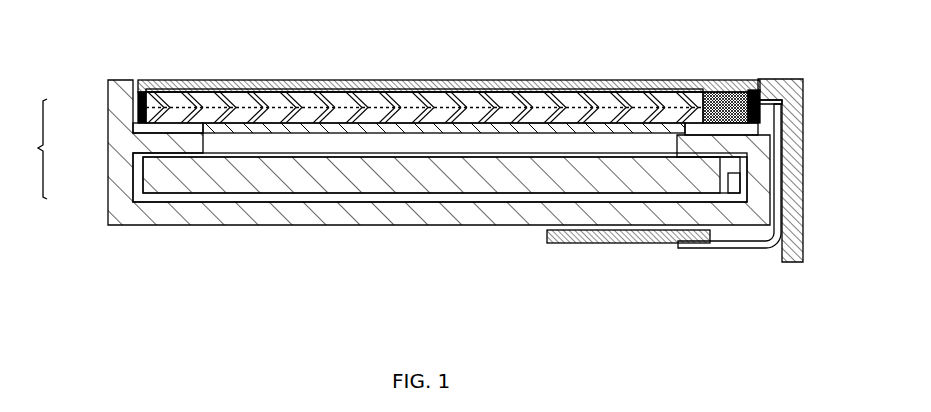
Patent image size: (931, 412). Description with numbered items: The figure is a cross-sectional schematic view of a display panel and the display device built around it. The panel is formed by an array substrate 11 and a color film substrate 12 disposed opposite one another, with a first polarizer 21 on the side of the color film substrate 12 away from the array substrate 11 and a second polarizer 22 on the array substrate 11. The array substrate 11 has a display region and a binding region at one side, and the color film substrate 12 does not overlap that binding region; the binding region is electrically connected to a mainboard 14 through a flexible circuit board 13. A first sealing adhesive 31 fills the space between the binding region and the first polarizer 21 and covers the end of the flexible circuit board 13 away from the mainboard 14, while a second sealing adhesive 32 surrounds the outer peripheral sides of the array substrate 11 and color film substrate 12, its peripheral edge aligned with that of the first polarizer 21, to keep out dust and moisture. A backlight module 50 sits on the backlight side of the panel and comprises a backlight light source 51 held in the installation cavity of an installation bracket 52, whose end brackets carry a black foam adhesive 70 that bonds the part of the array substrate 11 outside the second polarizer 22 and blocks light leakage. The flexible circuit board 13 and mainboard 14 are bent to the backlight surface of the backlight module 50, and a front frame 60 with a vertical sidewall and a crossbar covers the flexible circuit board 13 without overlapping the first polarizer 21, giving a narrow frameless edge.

The array substrate 11 is at (300, 80).
The color film substrate 12 is at (348, 84).
The first polarizer 21 is at (482, 86).
The second polarizer 22 is at (428, 87).
The first sealing adhesive 31 is at (725, 80).
The second sealing adhesive 32 is at (803, 93).
The flexible circuit board 13 is at (803, 178).
The black foam adhesive 70 is at (783, 115).
The front frame 60 is at (803, 228).
The mainboard 14 is at (643, 235).
The backlight module 50 is at (395, 152).
The backlight light source 51 is at (133, 165).
The installation bracket 52 is at (135, 218).